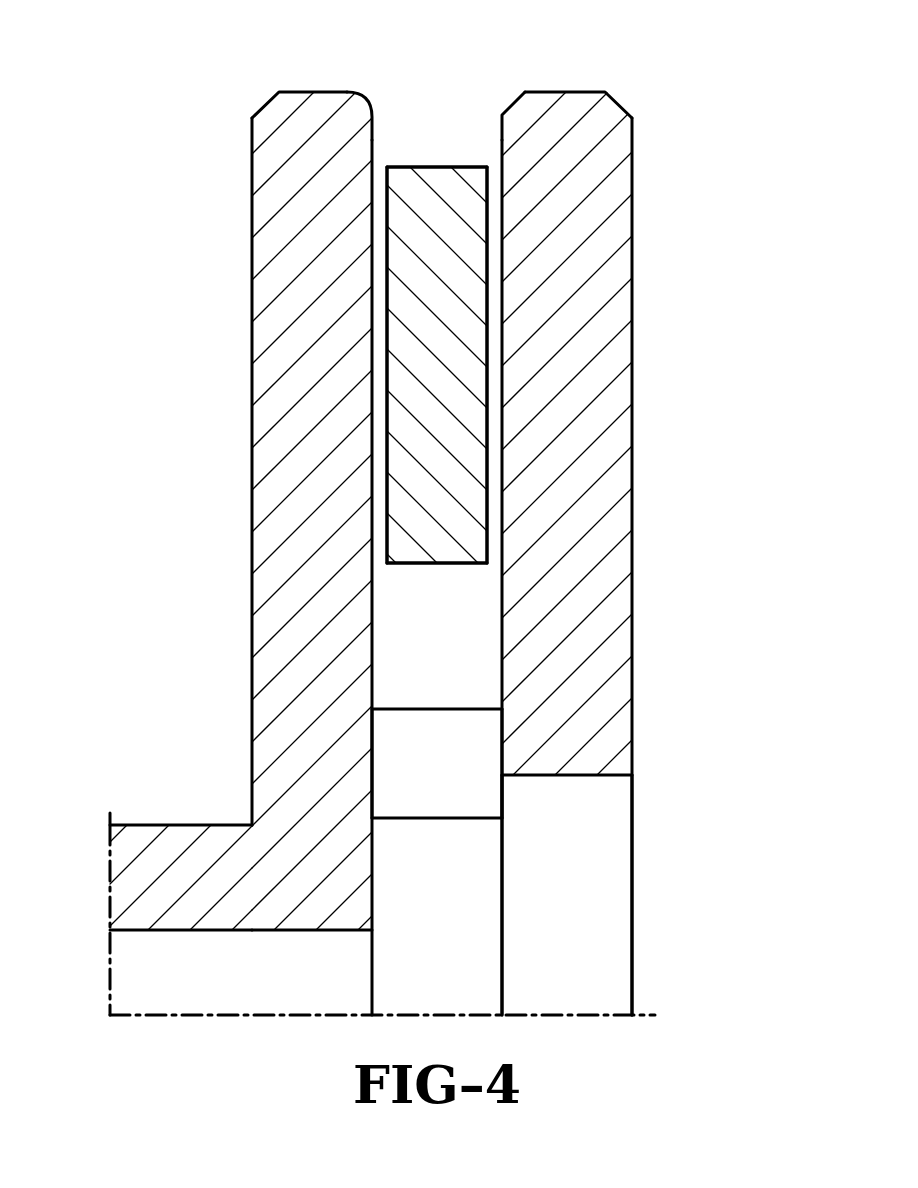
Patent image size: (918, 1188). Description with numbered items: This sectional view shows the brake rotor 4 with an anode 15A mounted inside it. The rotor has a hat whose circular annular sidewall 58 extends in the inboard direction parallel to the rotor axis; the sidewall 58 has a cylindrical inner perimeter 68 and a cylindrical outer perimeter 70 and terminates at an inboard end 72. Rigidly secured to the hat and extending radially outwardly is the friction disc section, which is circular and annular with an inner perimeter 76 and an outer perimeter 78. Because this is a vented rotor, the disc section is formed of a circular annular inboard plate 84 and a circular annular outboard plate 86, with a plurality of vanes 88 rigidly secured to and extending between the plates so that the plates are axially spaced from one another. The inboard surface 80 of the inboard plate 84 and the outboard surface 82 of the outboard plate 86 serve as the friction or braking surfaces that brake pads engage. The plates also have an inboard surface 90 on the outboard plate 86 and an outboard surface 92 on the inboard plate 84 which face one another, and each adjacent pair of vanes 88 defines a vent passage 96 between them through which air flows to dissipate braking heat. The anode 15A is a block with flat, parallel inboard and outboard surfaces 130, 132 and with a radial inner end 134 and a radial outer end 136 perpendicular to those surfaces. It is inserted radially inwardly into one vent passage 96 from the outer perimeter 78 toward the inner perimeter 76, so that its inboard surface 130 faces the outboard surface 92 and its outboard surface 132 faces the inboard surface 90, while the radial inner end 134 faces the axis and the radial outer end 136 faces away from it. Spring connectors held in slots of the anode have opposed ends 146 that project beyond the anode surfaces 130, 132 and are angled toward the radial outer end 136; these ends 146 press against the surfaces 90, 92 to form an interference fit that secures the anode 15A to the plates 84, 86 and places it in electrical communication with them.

The brake rotor 4 is at (642, 132).
The anode 15A is at (380, 284).
The sidewall 58 is at (183, 825).
The outer perimeter 70 is at (181, 877).
The inner perimeter 68 is at (168, 930).
The inboard end 72 is at (267, 915).
The inner perimeter 76 is at (577, 775).
The outer perimeter 78 is at (547, 92).
The inboard surface 80 is at (632, 432).
The outboard surface 82 is at (252, 545).
The inboard plate 84 is at (632, 305).
The outboard plate 86 is at (250, 334).
The vanes 88 is at (410, 650).
The inboard surface 90 is at (372, 140).
The outboard surface 92 is at (502, 138).
The vent passage 96 is at (459, 643).
The inboard surface 130 is at (487, 385).
The outboard surface 132 is at (385, 400).
The radial inner end 134 is at (442, 563).
The radial outer end 136 is at (442, 167).
The spring ends 146 is at (372, 222).